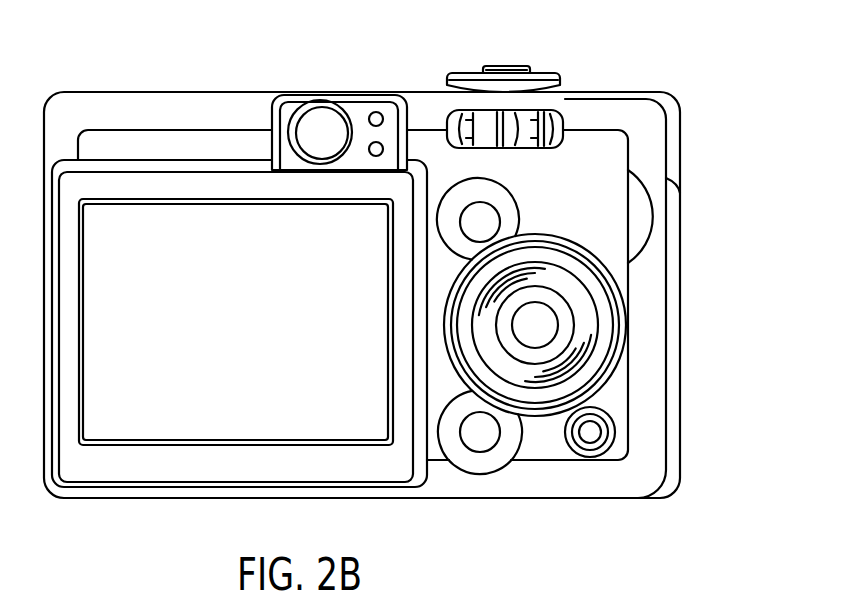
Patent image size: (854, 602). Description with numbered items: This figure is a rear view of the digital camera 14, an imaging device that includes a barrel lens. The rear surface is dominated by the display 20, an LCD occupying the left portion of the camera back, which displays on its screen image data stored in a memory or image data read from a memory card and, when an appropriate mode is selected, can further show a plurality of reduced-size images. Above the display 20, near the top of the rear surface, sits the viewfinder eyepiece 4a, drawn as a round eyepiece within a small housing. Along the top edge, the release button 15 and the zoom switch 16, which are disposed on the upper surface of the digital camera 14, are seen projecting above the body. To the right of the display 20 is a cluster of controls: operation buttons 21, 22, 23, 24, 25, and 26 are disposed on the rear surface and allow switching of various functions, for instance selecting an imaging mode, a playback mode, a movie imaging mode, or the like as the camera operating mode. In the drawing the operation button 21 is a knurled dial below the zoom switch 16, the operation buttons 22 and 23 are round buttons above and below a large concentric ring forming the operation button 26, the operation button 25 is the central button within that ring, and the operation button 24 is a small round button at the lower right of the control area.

The digital camera 14 is at (140, 102).
The viewfinder eyepiece 4a is at (320, 113).
The release button 15 is at (499, 68).
The zoom switch 16 is at (537, 87).
The operation button 21 is at (528, 123).
The operation button 22 is at (481, 222).
The operation button 23 is at (480, 437).
The operation button 24 is at (590, 437).
The operation button 25 is at (542, 323).
The operation button 26 is at (597, 347).
The display 20 is at (158, 430).